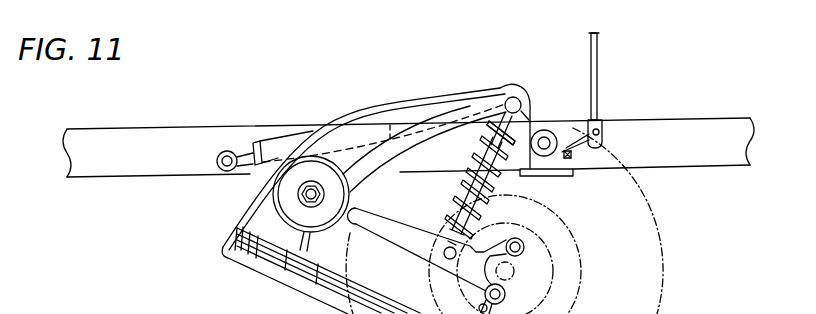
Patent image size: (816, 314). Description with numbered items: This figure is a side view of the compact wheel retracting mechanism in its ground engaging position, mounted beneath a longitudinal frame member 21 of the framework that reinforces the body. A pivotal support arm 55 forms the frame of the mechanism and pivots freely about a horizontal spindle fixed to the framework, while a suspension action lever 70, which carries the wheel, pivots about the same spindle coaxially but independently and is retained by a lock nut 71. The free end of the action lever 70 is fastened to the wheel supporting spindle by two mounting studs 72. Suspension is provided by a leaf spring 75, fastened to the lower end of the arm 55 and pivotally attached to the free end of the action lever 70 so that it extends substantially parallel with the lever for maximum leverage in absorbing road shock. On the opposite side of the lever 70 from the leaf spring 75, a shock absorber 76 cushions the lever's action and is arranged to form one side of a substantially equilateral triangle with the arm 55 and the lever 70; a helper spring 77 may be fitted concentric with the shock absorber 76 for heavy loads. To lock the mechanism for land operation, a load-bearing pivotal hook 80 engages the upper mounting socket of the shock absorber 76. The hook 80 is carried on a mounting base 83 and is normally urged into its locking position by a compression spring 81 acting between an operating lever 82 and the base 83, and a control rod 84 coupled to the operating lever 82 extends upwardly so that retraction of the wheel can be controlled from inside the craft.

The longitudinal frame member 21 is at (138, 139).
The pivotal support arm 55 is at (248, 211).
The suspension action lever 70 is at (412, 238).
The lock nut 71 is at (316, 195).
The mounting studs 72 is at (503, 294).
The leaf spring 75 is at (320, 282).
The shock absorber 76 is at (457, 187).
The helper spring 77 is at (478, 152).
The pivotal hook 80 is at (532, 104).
The compression spring 81 is at (571, 158).
The operating lever 82 is at (572, 135).
The mounting base 83 is at (551, 177).
The control rod 84 is at (600, 43).